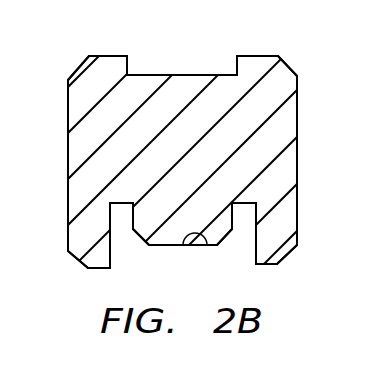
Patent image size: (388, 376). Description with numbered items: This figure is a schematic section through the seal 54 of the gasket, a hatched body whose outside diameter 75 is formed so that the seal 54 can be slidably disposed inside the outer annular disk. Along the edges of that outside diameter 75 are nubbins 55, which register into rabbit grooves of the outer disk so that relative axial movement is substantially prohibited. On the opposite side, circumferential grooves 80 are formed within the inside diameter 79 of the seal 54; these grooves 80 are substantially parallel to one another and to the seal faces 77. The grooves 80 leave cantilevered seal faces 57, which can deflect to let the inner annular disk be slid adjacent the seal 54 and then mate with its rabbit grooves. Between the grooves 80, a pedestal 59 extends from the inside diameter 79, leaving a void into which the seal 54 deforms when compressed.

The seal 54 is at (297, 165).
The nubbins 55 is at (93, 83).
The cantilevered seal faces 57 is at (87, 240).
The pedestal 59 is at (167, 246).
The outside diameter 75 is at (184, 75).
The seal faces 77 is at (68, 152).
The inside diameter 79 is at (206, 246).
The circumferential grooves 80 is at (120, 204).